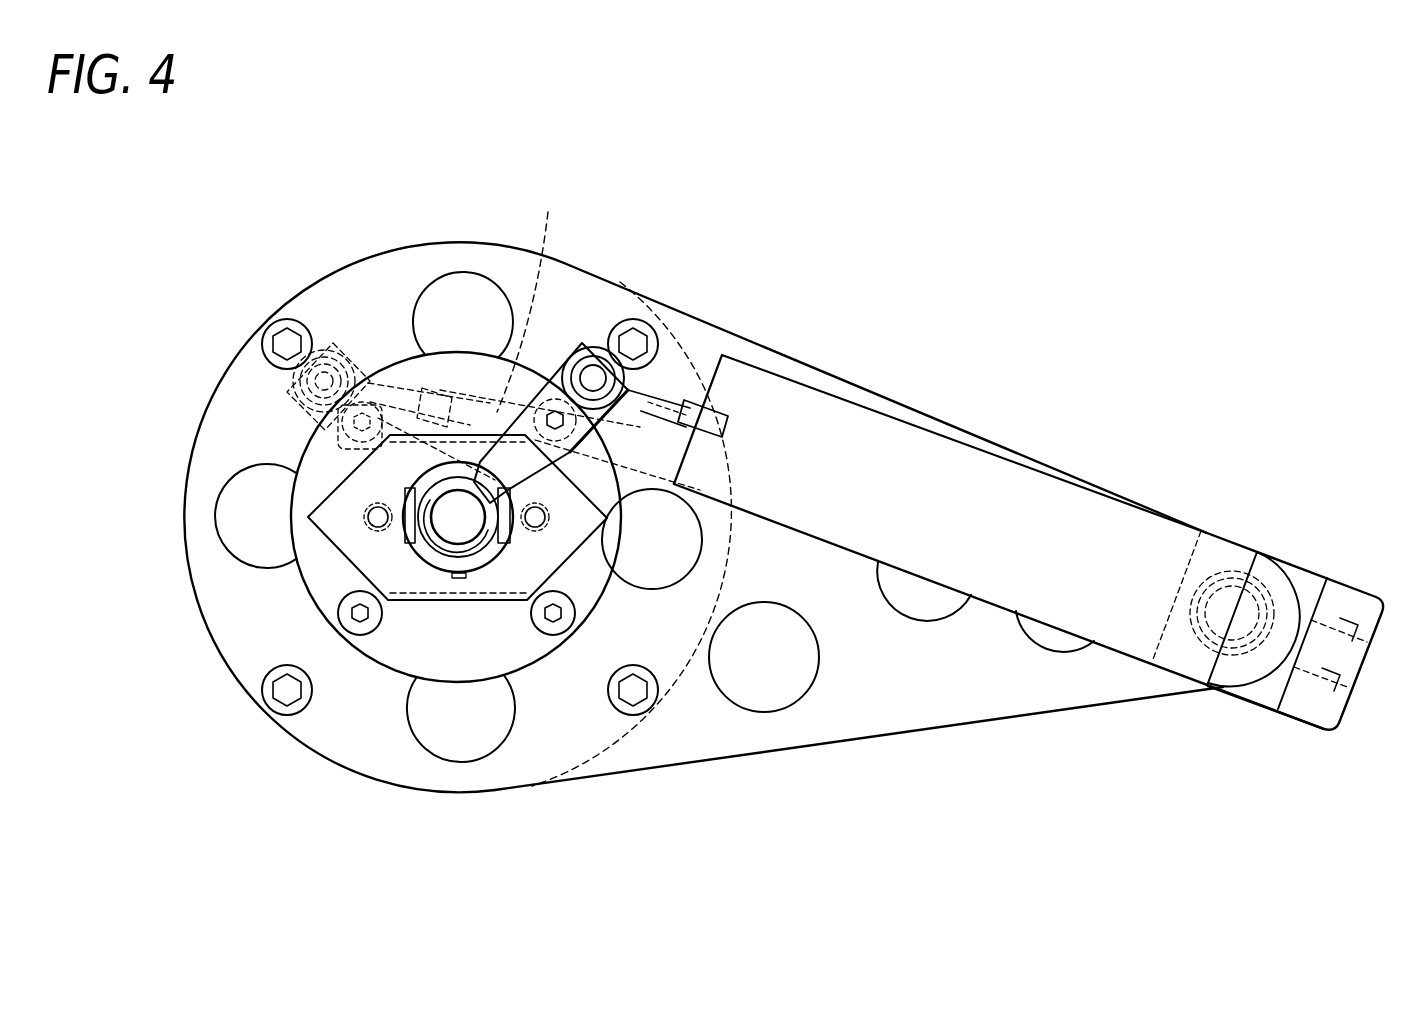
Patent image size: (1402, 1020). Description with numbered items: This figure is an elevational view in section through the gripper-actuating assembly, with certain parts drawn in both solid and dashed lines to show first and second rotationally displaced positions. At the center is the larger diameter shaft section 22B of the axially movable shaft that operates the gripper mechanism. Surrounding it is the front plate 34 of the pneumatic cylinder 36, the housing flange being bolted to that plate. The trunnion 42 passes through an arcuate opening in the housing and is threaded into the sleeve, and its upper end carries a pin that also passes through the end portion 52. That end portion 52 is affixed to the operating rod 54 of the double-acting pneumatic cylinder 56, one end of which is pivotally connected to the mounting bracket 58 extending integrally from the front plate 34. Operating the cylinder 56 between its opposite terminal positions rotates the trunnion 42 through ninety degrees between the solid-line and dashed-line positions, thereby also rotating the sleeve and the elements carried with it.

The larger diameter shaft section 22B is at (450, 522).
The front plate 34 is at (352, 738).
The pneumatic cylinder 36 is at (431, 258).
The trunnion 42 is at (320, 532).
The end portion 52 is at (593, 350).
The operating rod 54 is at (532, 295).
The double-acting pneumatic cylinder 56 is at (1120, 528).
The mounting bracket 58 is at (985, 690).